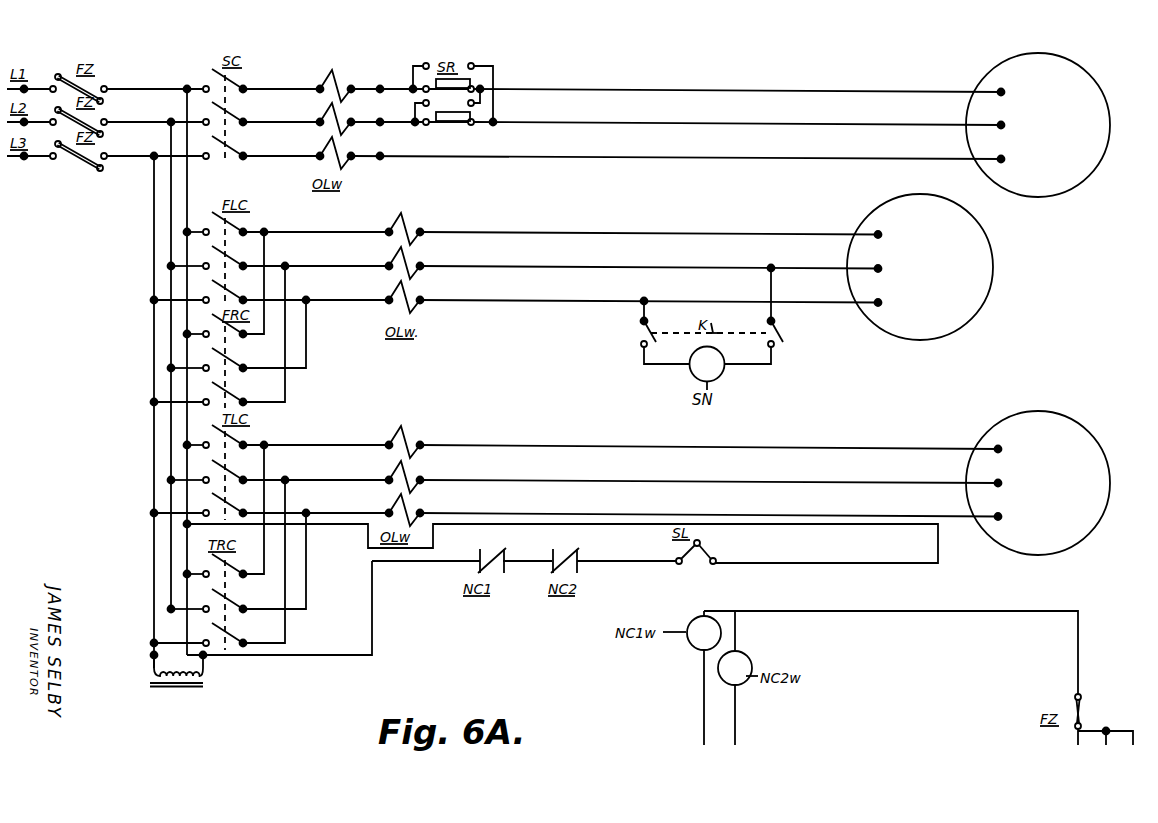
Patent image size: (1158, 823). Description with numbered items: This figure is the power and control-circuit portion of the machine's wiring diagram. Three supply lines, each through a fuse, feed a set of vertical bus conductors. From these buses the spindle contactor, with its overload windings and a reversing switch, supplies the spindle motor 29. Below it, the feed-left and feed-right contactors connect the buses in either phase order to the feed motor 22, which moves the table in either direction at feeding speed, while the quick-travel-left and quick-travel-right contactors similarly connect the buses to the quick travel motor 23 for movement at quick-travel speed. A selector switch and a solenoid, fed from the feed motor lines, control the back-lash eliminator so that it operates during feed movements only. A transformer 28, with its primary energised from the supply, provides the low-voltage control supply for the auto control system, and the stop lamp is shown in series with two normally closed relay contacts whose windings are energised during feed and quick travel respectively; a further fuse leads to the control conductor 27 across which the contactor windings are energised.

The spindle motor 29 is at (1092, 79).
The feed motor 22 is at (984, 249).
The quick travel motor 23 is at (1090, 449).
The transformer 28 is at (150, 683).
The conductor 27 is at (1112, 732).